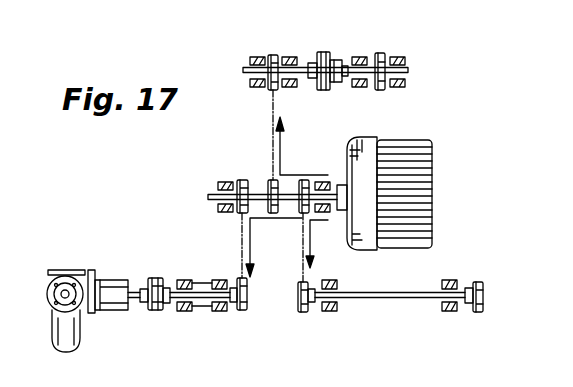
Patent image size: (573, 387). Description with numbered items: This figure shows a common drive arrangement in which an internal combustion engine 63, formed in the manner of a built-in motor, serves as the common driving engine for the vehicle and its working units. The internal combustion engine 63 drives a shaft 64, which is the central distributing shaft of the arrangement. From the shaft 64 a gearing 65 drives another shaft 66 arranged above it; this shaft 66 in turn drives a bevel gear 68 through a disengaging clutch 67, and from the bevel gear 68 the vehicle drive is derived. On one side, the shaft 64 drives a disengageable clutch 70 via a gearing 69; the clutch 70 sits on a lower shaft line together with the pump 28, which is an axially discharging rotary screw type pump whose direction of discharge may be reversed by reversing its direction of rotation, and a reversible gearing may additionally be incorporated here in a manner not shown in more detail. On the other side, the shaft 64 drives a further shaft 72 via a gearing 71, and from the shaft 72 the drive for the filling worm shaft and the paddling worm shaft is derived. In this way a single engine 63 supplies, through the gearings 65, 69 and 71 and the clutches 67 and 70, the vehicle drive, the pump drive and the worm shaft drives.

The pump 28 is at (105, 277).
The internal combustion engine 63 is at (428, 178).
The shaft 64 is at (272, 180).
The gearing 65 is at (270, 122).
The shaft 66 is at (276, 55).
The disengaging clutch 67 is at (328, 52).
The bevel gear 68 is at (383, 53).
The gearing 69 is at (240, 246).
The disengageable clutch 70 is at (157, 312).
The gearing 71 is at (311, 255).
The shaft 72 is at (406, 300).